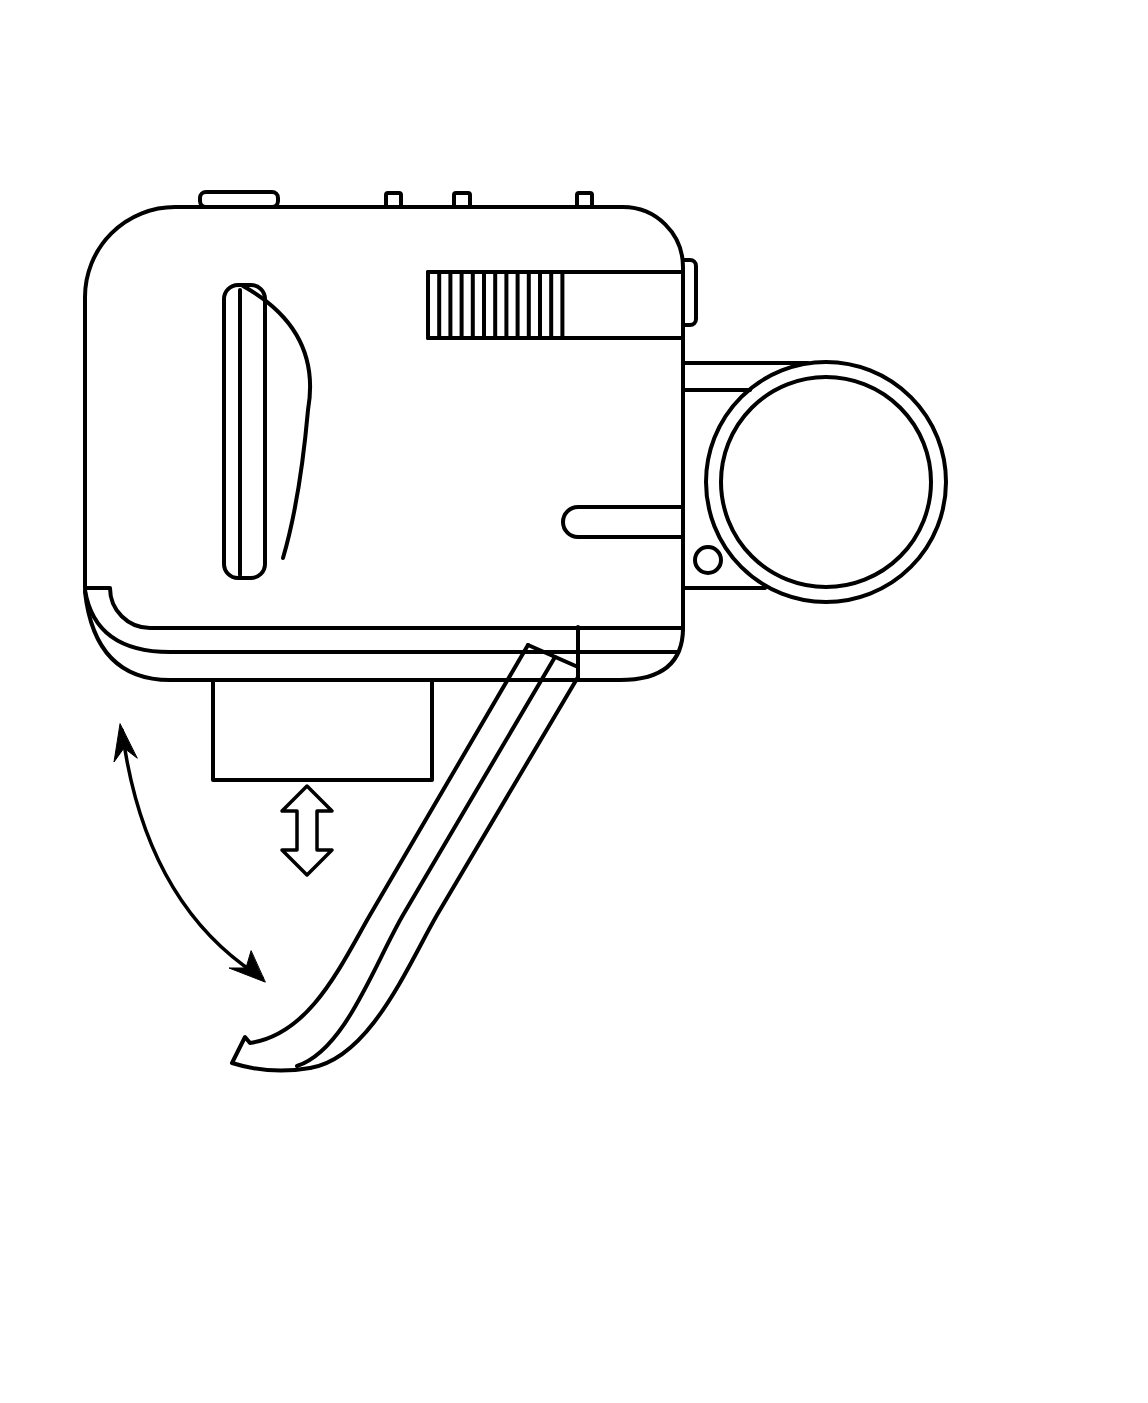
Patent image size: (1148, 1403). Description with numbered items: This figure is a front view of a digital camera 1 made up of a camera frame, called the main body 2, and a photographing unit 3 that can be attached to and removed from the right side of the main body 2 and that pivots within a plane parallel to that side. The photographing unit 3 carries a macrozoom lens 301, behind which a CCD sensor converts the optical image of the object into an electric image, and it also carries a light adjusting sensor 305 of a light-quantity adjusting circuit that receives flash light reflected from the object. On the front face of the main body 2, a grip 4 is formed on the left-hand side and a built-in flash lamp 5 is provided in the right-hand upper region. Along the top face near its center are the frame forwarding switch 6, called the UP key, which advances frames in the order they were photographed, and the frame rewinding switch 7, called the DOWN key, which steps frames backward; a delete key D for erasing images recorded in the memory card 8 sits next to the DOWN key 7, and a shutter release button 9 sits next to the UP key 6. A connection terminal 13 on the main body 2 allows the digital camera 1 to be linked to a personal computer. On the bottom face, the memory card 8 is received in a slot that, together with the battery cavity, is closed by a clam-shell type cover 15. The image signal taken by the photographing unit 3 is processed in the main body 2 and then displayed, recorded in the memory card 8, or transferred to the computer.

The digital camera 1 is at (259, 185).
The main body 2 is at (323, 206).
The photographing unit 3 is at (822, 362).
The grip 4 is at (298, 452).
The built-in flash lamp 5 is at (505, 340).
The frame forwarding switch (UP key) 6 is at (392, 192).
The frame rewinding switch (DOWN key) 7 is at (462, 192).
The delete key D is at (585, 192).
The memory card 8 is at (213, 727).
The shutter release button 9 is at (231, 191).
The connection terminal 13 is at (696, 285).
The clam-shell type cover 15 is at (497, 820).
The macrozoom lens 301 is at (800, 496).
The light adjusting sensor 305 is at (708, 573).